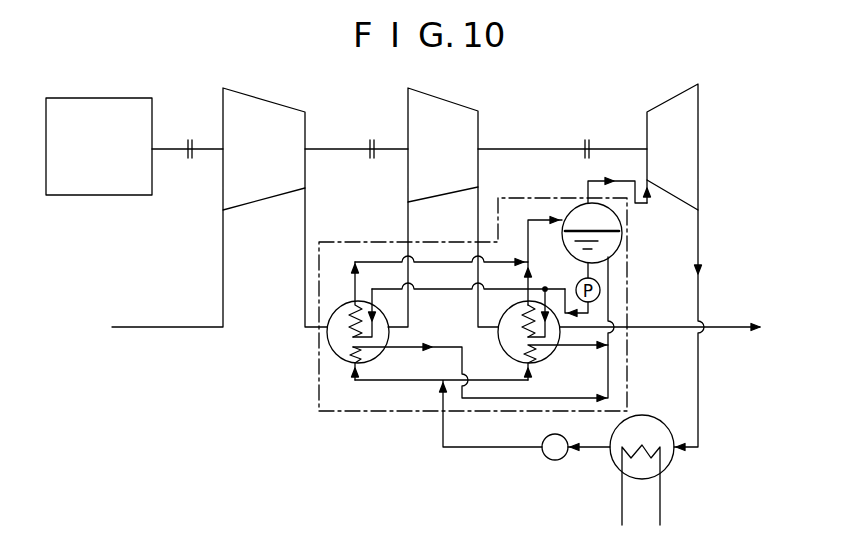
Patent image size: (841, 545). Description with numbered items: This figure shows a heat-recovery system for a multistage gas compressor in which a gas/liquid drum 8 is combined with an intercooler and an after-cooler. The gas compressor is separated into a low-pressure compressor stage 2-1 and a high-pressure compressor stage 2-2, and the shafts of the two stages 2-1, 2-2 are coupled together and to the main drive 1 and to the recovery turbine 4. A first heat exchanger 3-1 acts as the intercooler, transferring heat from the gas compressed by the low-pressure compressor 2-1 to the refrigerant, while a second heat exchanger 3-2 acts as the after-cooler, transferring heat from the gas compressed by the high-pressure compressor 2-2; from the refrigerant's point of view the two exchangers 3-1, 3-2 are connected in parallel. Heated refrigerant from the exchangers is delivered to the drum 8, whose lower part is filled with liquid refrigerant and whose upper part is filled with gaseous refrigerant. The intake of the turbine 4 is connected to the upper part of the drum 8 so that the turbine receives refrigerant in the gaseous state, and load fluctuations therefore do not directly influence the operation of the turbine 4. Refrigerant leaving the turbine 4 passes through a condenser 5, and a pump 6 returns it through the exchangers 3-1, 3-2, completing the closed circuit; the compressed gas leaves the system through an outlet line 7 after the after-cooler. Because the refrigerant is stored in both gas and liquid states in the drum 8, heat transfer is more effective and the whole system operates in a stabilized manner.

The main drive 1 is at (113, 186).
The low-pressure compressor stage 2-1 is at (257, 193).
The high-pressure compressor stage 2-2 is at (472, 130).
The first heat exchanger 3-1 is at (335, 345).
The second heat exchanger 3-2 is at (547, 355).
The recovery turbine 4 is at (692, 135).
The condenser 5 is at (668, 466).
The pump 6 is at (560, 458).
The outlet line 7 is at (732, 325).
The gas/liquid drum 8 is at (608, 242).